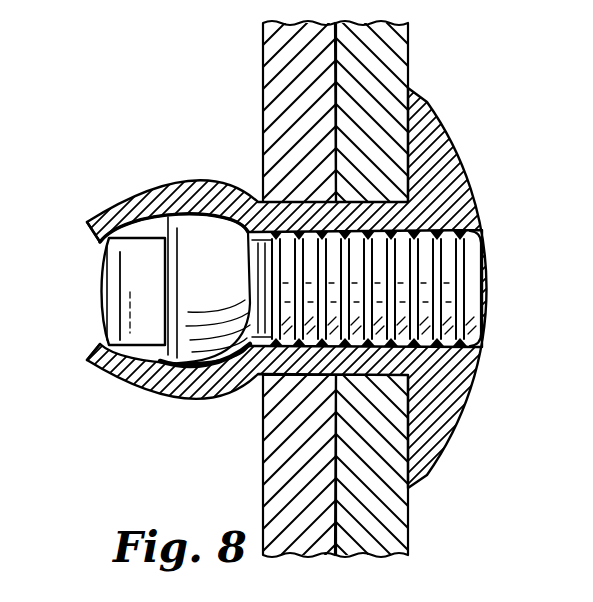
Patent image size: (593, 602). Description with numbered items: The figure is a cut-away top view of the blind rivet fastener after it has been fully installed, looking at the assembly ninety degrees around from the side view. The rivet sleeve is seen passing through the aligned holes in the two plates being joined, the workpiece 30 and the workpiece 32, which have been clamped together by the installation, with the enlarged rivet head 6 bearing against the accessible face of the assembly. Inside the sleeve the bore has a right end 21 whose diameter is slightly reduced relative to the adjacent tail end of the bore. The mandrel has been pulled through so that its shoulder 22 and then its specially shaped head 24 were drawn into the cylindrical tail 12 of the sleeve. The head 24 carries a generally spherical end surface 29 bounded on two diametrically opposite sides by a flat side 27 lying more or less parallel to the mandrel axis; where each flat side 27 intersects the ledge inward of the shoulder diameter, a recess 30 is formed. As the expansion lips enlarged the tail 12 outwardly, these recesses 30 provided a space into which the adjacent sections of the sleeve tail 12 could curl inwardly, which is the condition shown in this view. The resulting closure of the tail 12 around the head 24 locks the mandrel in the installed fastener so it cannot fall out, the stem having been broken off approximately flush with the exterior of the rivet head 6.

The head 6 is at (443, 134).
The tail 12 is at (100, 235).
The right end 21 is at (481, 237).
The shoulder 22 is at (203, 232).
The head 24 is at (100, 288).
The flat side 27 is at (140, 196).
The end surface 29 is at (100, 310).
The recess 30 is at (400, 52).
The workpiece 32 is at (277, 57).